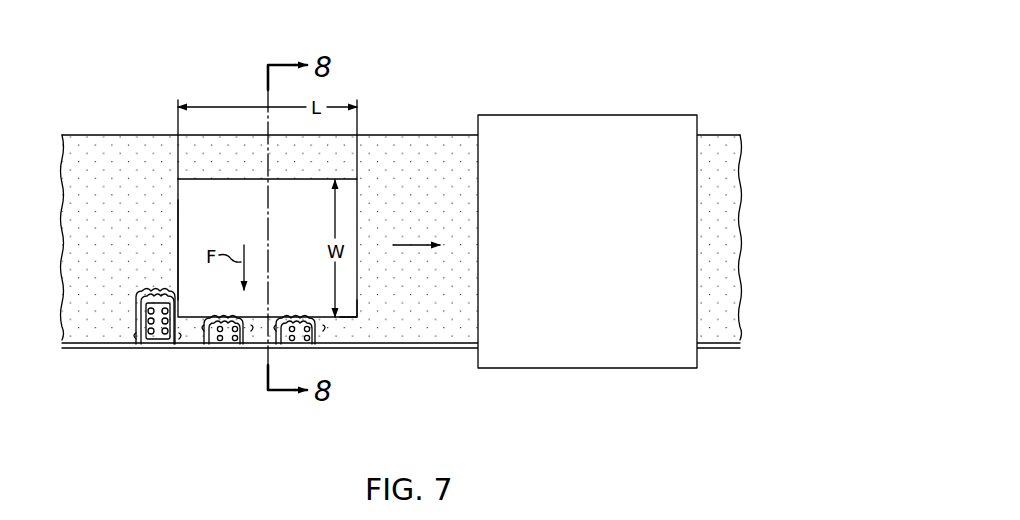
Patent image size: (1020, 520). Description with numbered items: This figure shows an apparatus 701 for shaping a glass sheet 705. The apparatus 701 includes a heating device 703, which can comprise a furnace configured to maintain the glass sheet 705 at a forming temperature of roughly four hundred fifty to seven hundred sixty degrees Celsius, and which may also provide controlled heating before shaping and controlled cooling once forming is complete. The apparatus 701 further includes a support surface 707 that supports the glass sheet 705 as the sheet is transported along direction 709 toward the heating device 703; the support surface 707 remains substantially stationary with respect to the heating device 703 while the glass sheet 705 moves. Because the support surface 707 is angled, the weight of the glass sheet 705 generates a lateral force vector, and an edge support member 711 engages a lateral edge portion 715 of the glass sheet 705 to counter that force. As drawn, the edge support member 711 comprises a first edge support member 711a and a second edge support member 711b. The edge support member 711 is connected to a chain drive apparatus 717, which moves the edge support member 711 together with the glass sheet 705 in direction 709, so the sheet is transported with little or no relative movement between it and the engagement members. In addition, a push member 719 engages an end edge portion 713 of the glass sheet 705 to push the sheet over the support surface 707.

The apparatus 701 is at (394, 213).
The heating device 703 is at (597, 115).
The glass sheet 705 is at (210, 190).
The support surface 707 is at (401, 239).
The direction 709 is at (413, 246).
The edge support member 711 is at (253, 400).
The first edge support member 711a is at (225, 354).
The second edge support member 711b is at (289, 354).
The end edge portion 713 is at (178, 240).
The lateral edge portion 715 is at (355, 324).
The chain drive apparatus 717 is at (69, 350).
The push member 719 is at (156, 354).